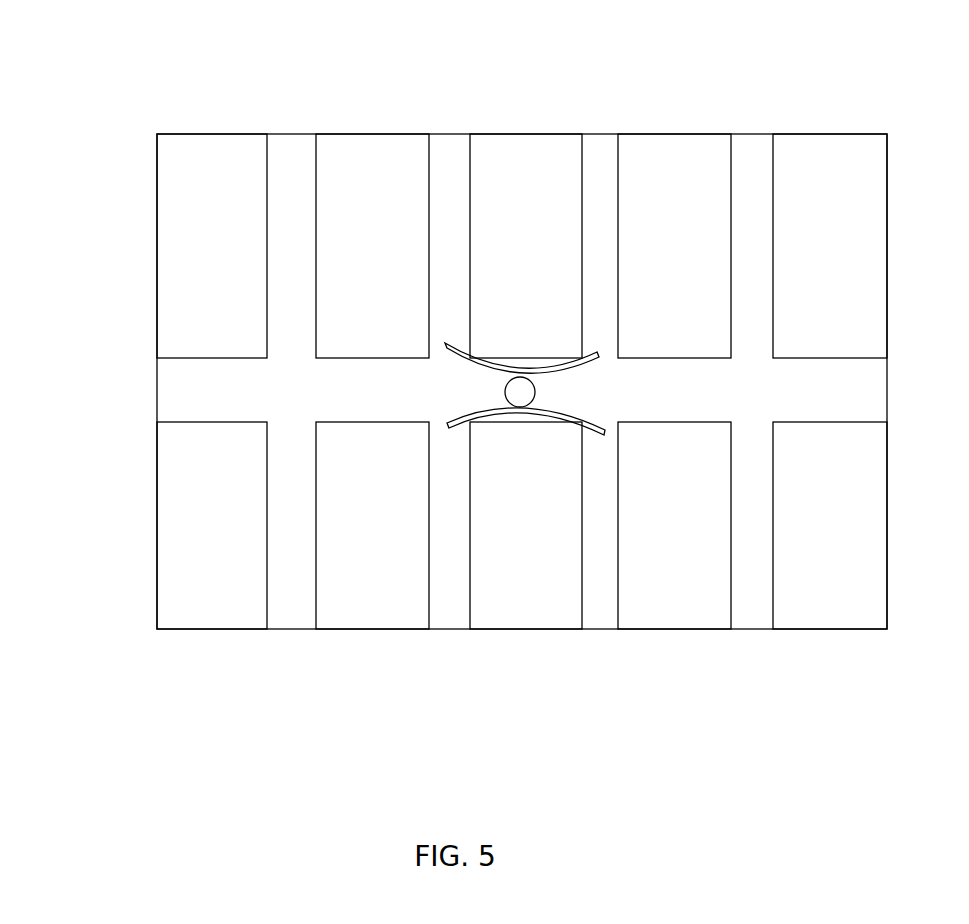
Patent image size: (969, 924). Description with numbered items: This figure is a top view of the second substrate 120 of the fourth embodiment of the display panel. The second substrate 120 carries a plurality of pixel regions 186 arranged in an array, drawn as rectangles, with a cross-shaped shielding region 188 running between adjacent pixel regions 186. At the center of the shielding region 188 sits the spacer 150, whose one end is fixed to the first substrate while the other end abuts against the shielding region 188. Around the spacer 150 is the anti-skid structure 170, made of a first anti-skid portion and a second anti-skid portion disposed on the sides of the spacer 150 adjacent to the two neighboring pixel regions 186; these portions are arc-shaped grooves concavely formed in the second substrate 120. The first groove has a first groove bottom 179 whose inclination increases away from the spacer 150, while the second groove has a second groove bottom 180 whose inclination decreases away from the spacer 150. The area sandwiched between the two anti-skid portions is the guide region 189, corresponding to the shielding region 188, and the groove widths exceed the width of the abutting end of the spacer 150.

The second substrate 120 is at (471, 319).
The shielding region 188 is at (360, 405).
The first groove bottom 179 is at (534, 216).
The pixel region 186 is at (527, 243).
The anti-skid structure 170 is at (760, 72).
The second groove bottom 180 is at (580, 382).
The spacer 150 is at (527, 392).
The guide region 189 is at (573, 393).